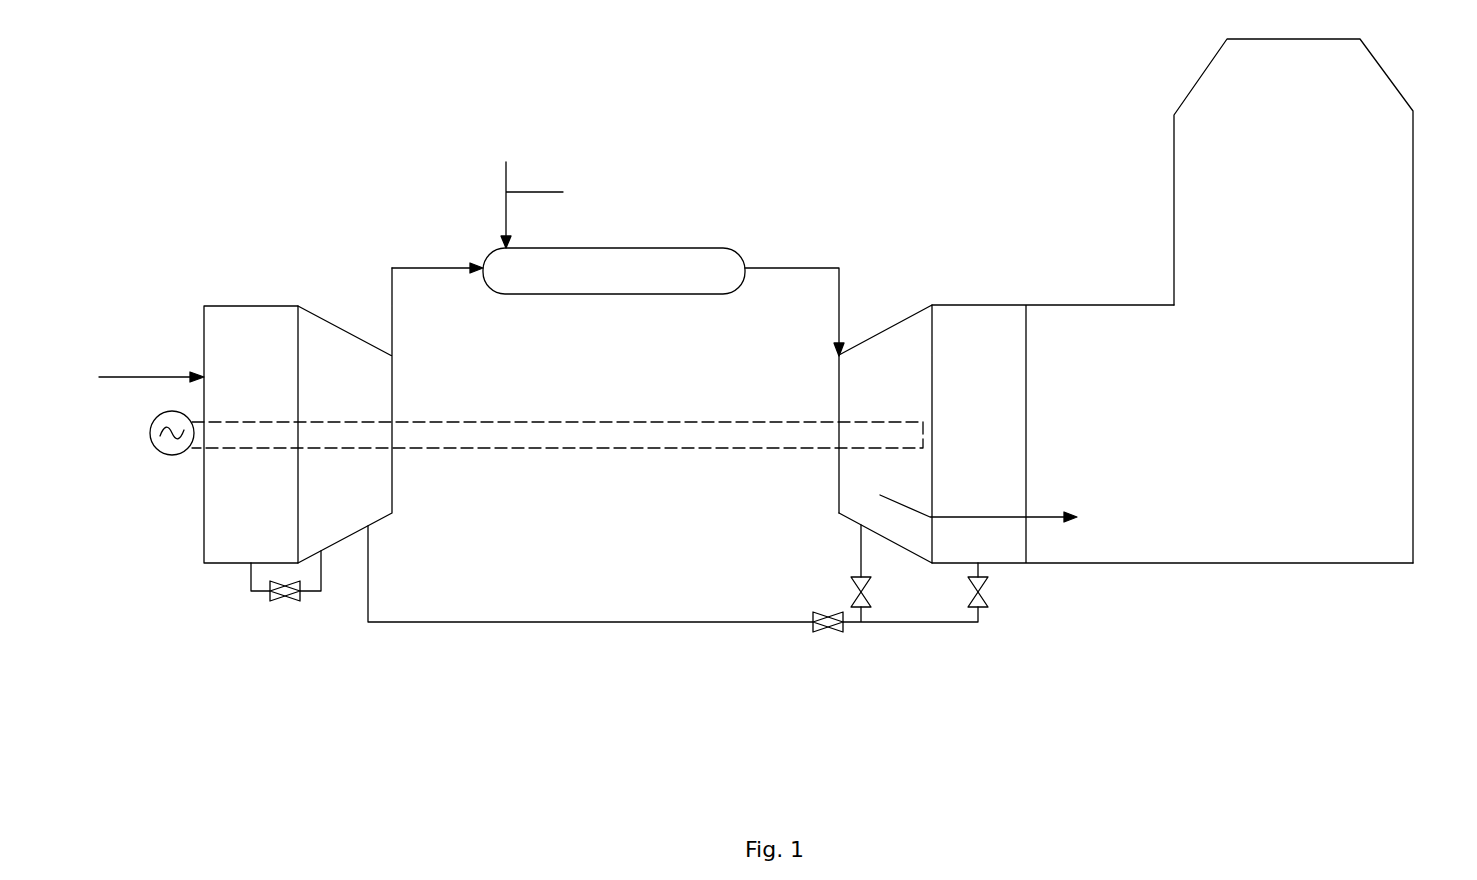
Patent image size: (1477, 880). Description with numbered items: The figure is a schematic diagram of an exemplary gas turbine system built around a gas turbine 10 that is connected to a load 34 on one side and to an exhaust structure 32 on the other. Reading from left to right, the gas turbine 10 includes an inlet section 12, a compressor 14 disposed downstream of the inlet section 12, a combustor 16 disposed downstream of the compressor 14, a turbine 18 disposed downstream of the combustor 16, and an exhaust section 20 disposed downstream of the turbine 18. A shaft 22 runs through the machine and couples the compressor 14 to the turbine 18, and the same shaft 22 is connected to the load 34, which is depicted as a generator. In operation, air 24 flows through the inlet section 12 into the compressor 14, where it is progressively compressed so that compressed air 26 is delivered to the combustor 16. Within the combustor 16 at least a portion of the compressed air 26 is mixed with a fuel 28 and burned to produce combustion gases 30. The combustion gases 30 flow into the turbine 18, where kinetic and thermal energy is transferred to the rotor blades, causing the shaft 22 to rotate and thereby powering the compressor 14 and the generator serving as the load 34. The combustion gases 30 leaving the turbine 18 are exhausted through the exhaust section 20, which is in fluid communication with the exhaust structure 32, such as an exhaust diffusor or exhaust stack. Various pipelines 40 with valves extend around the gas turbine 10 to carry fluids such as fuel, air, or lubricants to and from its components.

The gas turbine 10 is at (442, 187).
The inlet section 12 is at (250, 306).
The compressor 14 is at (315, 312).
The combustor 16 is at (672, 248).
The turbine 18 is at (913, 312).
The exhaust section 20 is at (995, 305).
The shaft 22 is at (478, 433).
The air 24 is at (169, 377).
The compressed air 26 is at (428, 270).
The fuel 28 is at (552, 205).
The combustion gases 30 is at (778, 270).
The exhaust structure 32 is at (1372, 220).
The load 34 is at (165, 457).
The pipelines 40 is at (257, 592).